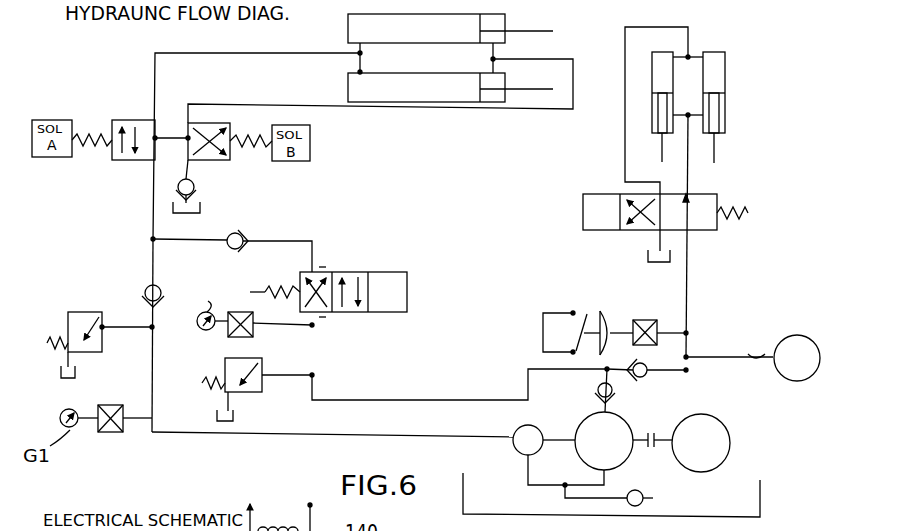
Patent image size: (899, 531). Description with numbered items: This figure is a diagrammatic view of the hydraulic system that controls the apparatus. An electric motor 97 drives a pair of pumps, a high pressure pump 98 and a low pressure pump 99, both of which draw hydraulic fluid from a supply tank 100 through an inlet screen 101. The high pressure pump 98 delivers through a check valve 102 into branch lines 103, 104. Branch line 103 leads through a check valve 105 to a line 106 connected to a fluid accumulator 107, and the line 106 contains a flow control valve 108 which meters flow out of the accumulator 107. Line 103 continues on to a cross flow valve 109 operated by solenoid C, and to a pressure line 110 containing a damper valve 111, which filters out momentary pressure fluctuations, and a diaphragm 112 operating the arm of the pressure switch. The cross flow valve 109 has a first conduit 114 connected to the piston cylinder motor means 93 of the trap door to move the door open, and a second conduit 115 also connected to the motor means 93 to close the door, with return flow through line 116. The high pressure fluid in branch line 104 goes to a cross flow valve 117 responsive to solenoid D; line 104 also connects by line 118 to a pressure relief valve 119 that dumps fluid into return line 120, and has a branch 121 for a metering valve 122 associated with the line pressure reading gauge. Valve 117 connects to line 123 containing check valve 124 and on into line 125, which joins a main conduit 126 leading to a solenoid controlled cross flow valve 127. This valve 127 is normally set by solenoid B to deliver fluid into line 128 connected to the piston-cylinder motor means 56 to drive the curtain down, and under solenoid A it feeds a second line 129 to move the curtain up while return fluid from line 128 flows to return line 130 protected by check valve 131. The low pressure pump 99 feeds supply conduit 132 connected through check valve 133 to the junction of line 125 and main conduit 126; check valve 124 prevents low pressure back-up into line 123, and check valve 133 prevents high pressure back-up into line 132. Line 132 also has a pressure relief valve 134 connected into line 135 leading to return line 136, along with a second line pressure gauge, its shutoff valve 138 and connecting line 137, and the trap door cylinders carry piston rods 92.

The piston-cylinder motor means 56 is at (407, 20).
The metal trap cylinder piston rod 92 is at (662, 153).
The piston cylinder motor means 93 is at (657, 62).
The electric motor 97 is at (731, 444).
The high pressure pump 98 is at (620, 462).
The low pressure pump 99 is at (514, 444).
The supply tank 100 is at (533, 518).
The inlet screen 101 is at (645, 493).
The check valve 102 is at (598, 400).
The branch line 103 is at (607, 369).
The branch line 104 is at (534, 379).
The check valve 105 is at (650, 370).
The line 106 is at (707, 357).
The fluid accumulator 107 is at (812, 378).
The flow control valve 108 is at (762, 362).
The cross flow valve 109 is at (707, 196).
The pressure line 110 is at (672, 331).
The damper valve 111 is at (632, 322).
The diaphragm 112 is at (595, 345).
The first conduit 114 is at (688, 180).
The second conduit 115 is at (625, 130).
The return line 116 is at (655, 239).
The cross flow valve 117 is at (343, 315).
The line 118 is at (273, 377).
The pressure relief valve 119 is at (250, 395).
The return line 120 is at (223, 398).
The branch 121 is at (297, 325).
The metering valve 122 is at (228, 338).
The line 123 is at (283, 242).
The check valve 124 is at (240, 253).
The line 125 is at (165, 240).
The main conduit 126 is at (151, 220).
The cross flow valve 127 is at (147, 120).
The line 128 is at (332, 107).
The second line 129 is at (157, 75).
The return line 130 is at (188, 167).
The check valve 131 is at (194, 190).
The supply conduit 132 is at (312, 438).
The check valve 133 is at (149, 283).
The pressure relief valve 134 is at (68, 325).
The line 135 is at (125, 328).
The return line 136 is at (58, 357).
The gauge line 137 is at (137, 422).
The gauge shutoff valve 138 is at (110, 433).